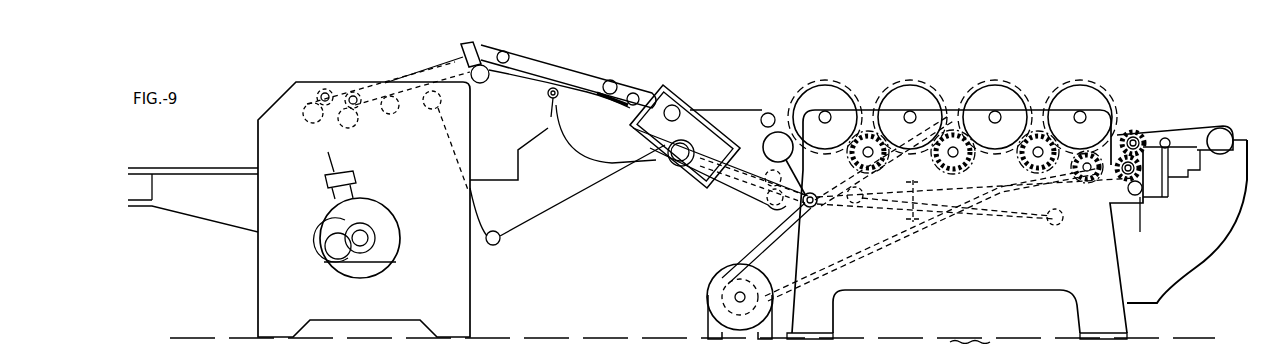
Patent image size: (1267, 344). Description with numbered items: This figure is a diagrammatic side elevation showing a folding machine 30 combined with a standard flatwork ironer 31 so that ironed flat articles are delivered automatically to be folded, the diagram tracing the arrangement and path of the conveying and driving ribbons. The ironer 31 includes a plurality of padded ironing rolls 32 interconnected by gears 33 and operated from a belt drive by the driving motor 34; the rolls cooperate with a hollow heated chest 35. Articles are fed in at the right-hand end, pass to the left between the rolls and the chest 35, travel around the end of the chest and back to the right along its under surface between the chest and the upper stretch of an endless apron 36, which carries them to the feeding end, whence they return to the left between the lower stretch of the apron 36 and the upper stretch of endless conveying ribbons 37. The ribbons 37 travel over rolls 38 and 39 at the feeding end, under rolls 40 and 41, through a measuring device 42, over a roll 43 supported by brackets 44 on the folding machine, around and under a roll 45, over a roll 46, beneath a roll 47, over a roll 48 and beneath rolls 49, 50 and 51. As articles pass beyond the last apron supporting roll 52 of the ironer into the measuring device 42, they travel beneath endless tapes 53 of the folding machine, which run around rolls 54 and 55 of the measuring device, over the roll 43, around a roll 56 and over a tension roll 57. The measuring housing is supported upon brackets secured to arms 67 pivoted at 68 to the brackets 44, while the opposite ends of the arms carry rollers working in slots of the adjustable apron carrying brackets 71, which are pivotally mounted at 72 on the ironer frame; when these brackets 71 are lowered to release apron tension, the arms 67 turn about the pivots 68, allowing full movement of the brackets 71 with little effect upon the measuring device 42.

The folding machine 30 is at (368, 223).
The flatwork ironer 31 is at (1017, 224).
The padded ironing rolls 32 is at (900, 108).
The gears 33 is at (940, 160).
The driving motor 34 is at (722, 274).
The hollow heated chest 35 is at (782, 133).
The endless apron 36 is at (748, 145).
The endless conveying ribbons 37 is at (540, 80).
The roll 38 is at (1137, 131).
The roll 39 is at (1140, 193).
The roll 40 is at (855, 204).
The roll 41 is at (760, 197).
The measuring device 42 is at (606, 110).
The roll 43 is at (486, 83).
The brackets 44 is at (403, 209).
The roll 45 is at (394, 114).
The roll 46 is at (432, 110).
The roll 47 is at (501, 240).
The roll 48 is at (674, 164).
The roll 49 is at (768, 207).
The roll 50 is at (1055, 226).
The roll 51 is at (1133, 223).
The apron supporting roll 52 is at (673, 107).
The endless tapes 53 is at (586, 80).
The roll 54 is at (638, 94).
The roll 55 is at (614, 81).
The roll 56 is at (358, 96).
The tension roll 57 is at (509, 56).
The arms 67 is at (600, 156).
The pivot 68 is at (552, 114).
The apron carrying brackets 71 is at (718, 188).
The pivot 72 is at (817, 208).